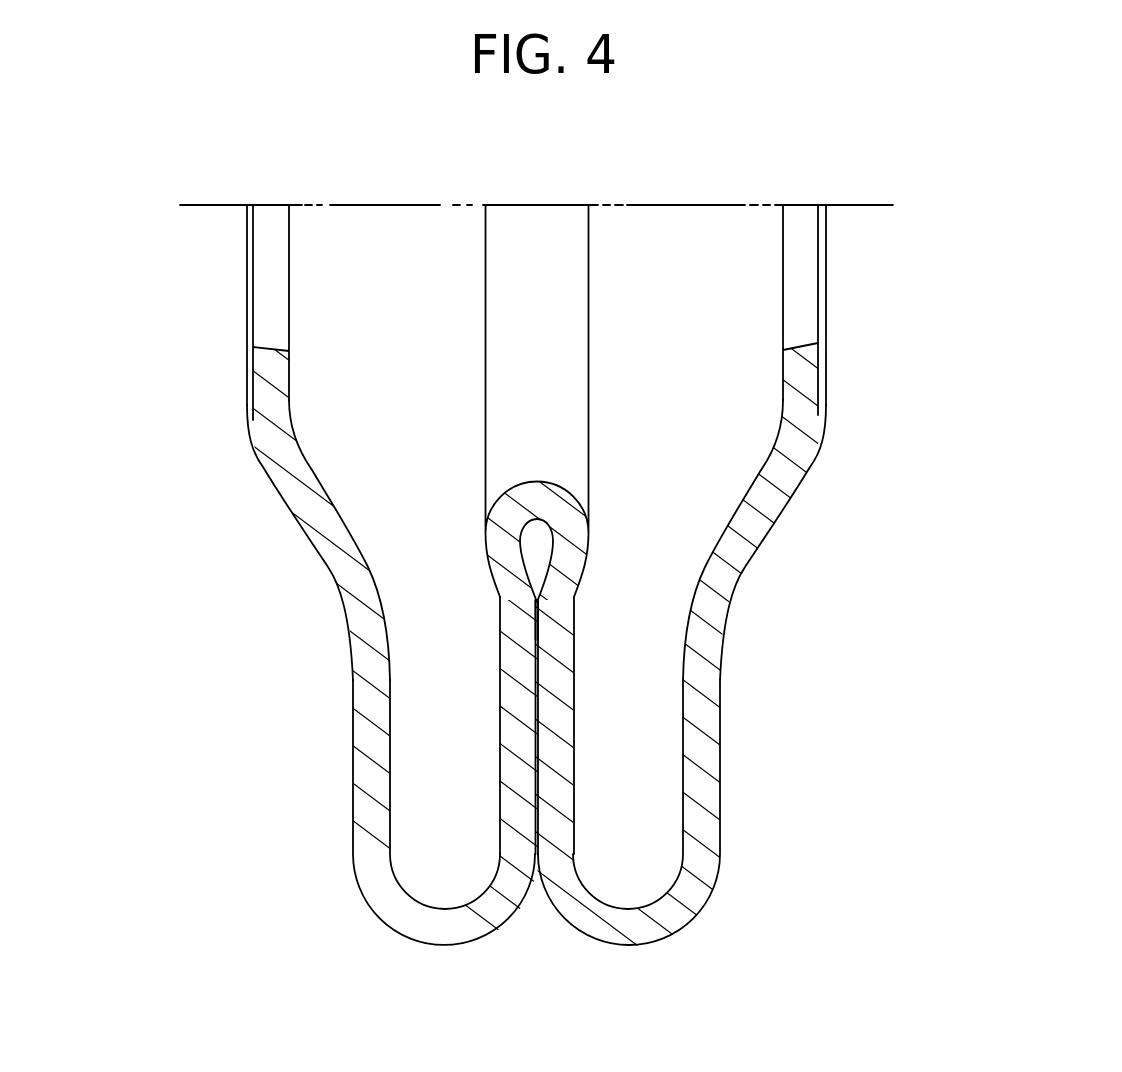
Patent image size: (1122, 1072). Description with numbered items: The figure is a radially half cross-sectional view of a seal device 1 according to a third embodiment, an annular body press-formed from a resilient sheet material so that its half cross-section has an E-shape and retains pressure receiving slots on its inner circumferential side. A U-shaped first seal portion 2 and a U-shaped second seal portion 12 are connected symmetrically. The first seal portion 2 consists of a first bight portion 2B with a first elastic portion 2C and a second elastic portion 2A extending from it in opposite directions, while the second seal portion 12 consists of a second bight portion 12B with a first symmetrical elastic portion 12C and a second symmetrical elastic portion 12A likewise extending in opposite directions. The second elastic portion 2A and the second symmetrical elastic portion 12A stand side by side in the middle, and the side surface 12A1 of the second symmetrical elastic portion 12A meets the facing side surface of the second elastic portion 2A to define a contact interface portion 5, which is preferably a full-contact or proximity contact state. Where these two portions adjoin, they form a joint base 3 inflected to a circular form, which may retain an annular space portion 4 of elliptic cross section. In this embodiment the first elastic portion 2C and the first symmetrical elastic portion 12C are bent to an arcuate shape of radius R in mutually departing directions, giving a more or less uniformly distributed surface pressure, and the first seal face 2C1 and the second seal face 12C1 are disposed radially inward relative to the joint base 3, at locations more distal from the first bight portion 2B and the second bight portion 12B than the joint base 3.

The seal device 1 is at (530, 563).
The first seal portion 2 is at (683, 625).
The second seal portion 12 is at (392, 625).
The joint base 3 is at (563, 422).
The annular space portion 4 is at (535, 541).
The contact interface portion 5 is at (539, 603).
The second elastic portion 2A is at (560, 655).
The second symmetrical elastic portion 12A is at (539, 725).
The side surface of the second symmetrical elastic portion 12A1 is at (537, 770).
The first bight portion 2B is at (622, 947).
The second bight portion 12B is at (447, 947).
The first elastic portion 2C is at (798, 468).
The first symmetrical elastic portion 12C is at (340, 567).
The first seal face 2C1 is at (827, 402).
The second seal face 12C1 is at (247, 412).
The radius R is at (329, 584).